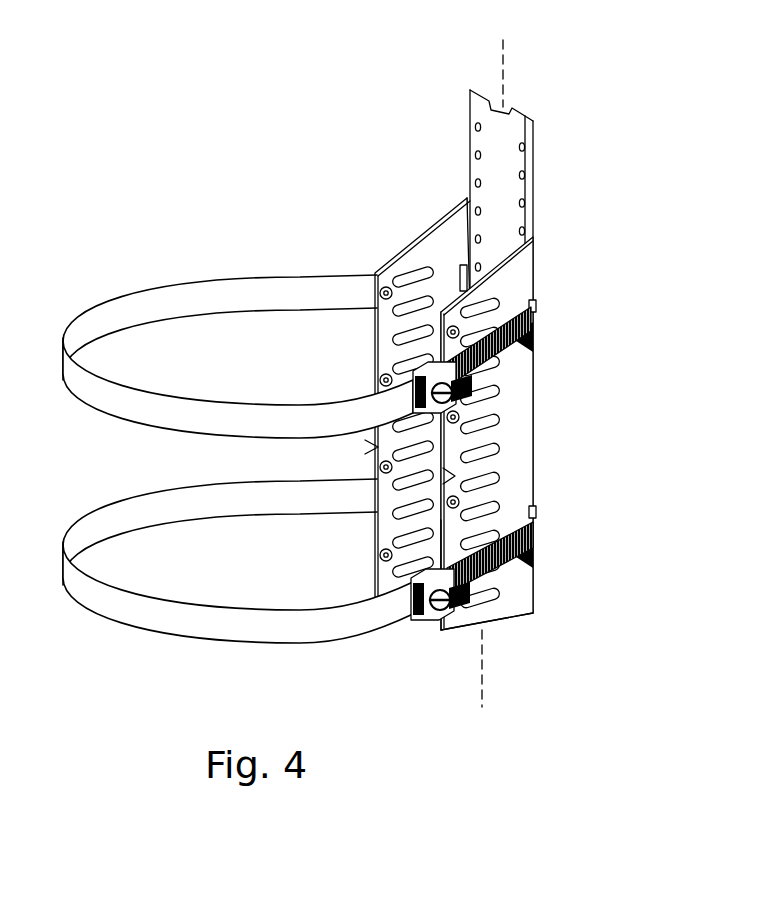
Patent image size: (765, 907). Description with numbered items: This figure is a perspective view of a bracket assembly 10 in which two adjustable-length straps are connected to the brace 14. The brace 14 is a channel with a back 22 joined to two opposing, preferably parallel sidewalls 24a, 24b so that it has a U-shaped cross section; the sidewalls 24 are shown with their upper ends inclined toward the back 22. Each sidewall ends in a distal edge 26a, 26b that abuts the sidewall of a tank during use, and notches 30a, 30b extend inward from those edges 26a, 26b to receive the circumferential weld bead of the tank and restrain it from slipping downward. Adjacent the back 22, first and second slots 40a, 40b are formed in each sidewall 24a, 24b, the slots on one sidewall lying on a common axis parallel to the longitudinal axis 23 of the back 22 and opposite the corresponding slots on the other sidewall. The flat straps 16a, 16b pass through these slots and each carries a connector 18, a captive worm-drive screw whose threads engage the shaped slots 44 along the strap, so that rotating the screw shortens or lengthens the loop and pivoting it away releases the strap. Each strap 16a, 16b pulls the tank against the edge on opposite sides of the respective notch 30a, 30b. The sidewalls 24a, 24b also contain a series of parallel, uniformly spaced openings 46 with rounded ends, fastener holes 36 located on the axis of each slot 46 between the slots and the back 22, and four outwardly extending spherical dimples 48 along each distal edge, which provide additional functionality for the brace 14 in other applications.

The bracket assembly 10 is at (272, 168).
The brace 14 is at (418, 138).
The first strap 16a is at (248, 293).
The second strap 16b is at (157, 503).
The connector 18 is at (458, 379).
The back 22 is at (508, 188).
The longitudinal axis 23 is at (505, 62).
The sidewall 24 is at (513, 273).
The first sidewall 24a is at (507, 581).
The second sidewall 24b is at (430, 243).
The distal edge 26a is at (452, 525).
The distal edge 26b is at (378, 545).
The notch 30a is at (457, 476).
The notch 30b is at (370, 447).
The fastener holes 36 is at (523, 148).
The first slot 40a is at (463, 265).
The second slot 40b is at (531, 511).
The slots 44 is at (536, 342).
The openings 46 is at (483, 460).
The dimples 48 is at (387, 278).